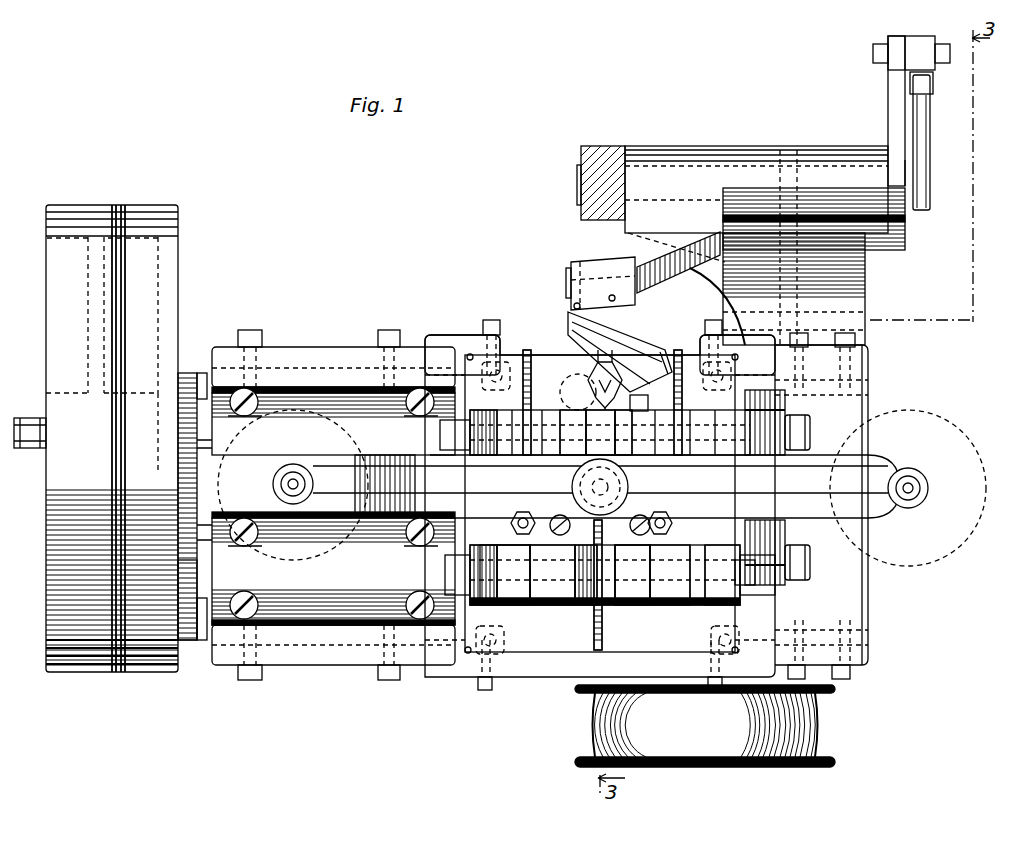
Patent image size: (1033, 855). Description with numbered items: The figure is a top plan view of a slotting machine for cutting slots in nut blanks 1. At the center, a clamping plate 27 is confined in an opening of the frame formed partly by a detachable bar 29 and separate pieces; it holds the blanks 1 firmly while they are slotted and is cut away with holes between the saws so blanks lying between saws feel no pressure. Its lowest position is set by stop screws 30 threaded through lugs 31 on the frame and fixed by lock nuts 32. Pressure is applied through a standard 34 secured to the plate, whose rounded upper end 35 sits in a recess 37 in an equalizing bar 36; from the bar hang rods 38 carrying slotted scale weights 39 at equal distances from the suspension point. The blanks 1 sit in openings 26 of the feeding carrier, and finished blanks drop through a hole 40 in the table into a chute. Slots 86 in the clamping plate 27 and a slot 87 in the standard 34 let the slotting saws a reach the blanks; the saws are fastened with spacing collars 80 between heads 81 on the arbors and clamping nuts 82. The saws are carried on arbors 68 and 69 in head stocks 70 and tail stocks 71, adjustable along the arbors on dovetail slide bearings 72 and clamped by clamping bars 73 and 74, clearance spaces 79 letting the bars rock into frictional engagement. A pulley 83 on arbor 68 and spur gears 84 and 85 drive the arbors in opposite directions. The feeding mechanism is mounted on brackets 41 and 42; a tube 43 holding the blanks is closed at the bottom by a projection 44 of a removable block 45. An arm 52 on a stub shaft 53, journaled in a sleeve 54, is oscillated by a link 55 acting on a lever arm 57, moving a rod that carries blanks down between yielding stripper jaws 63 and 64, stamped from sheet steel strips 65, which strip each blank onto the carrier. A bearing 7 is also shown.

The blanks 1 is at (545, 540).
The bearing 7 is at (705, 534).
The openings 26 is at (518, 520).
The clamping plate 27 is at (540, 340).
The bar 29 is at (527, 675).
The screws 30 is at (498, 377).
The lugs 31 is at (504, 362).
The lock nuts 32 is at (490, 335).
The standard 34 is at (645, 536).
The rounded upper end 35 is at (606, 484).
The equalizing bar 36 is at (432, 455).
The recess 37 is at (604, 491).
The rods 38 is at (293, 470).
The weights 39 is at (262, 555).
The hole 40 is at (575, 398).
The bracket 41 is at (866, 278).
The bracket 42 is at (628, 236).
The tube 43 is at (632, 345).
The projection 44 is at (572, 302).
The block 45 is at (582, 266).
The arm 52 is at (608, 146).
The stub shaft 53 is at (742, 160).
The sleeve 54 is at (828, 188).
The link 55 is at (930, 128).
The lever arm 57 is at (888, 86).
The stripper jaw 63 is at (586, 432).
The stripper jaw 64 is at (613, 432).
The sheet steel strips 65 is at (650, 386).
The arbor 68 is at (812, 441).
The arbor 69 is at (812, 571).
The head stocks 70 is at (333, 506).
The tail stocks 71 is at (788, 411).
The dovetail slide bearings 72 is at (333, 366).
The clamping bar 73 is at (279, 348).
The clamping bar 74 is at (818, 348).
The clearance spaces 79 is at (486, 432).
The spacing collars 80 is at (535, 600).
The heads 81 is at (492, 598).
The clamping nuts 82 is at (700, 600).
The pulley 83 is at (176, 283).
The spur gear 84 is at (190, 372).
The spur gear 85 is at (183, 642).
The slots 86 is at (523, 395).
The slot 87 is at (594, 540).
The slotting saw a is at (680, 370).